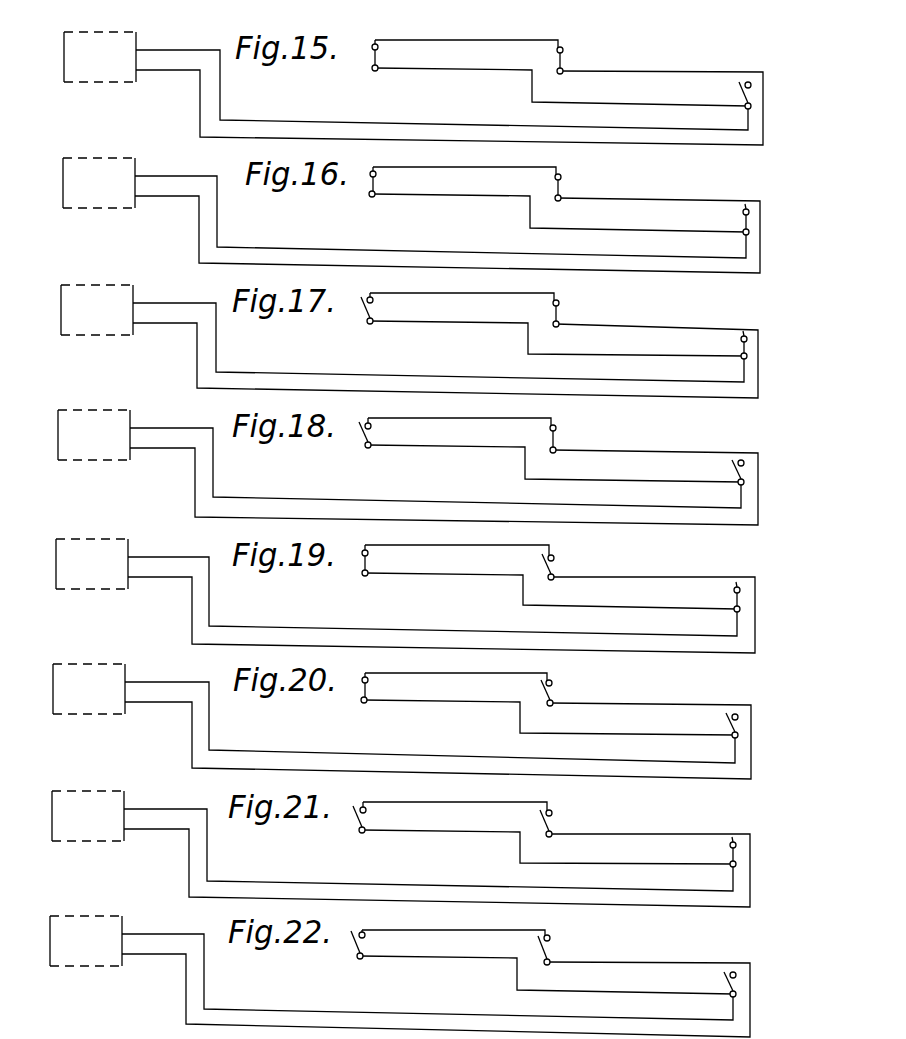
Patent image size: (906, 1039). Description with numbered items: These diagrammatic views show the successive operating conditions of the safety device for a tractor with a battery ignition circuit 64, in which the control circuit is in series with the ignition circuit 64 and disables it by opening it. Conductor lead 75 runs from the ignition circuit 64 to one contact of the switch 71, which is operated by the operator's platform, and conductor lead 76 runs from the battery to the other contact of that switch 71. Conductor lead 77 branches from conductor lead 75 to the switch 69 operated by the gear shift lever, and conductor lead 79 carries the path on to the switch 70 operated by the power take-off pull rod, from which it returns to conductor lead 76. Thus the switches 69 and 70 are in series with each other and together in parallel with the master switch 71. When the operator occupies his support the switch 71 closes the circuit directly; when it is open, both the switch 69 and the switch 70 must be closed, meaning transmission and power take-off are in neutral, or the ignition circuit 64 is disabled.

In FIG. 15, the ignition circuit 64 is at (92, 5).
In FIG. 16, the ignition circuit 64 is at (91, 131).
In FIG. 17, the ignition circuit 64 is at (89, 258).
In FIG. 18, the ignition circuit 64 is at (86, 383).
In FIG. 19, the ignition circuit 64 is at (84, 512).
In FIG. 20, the ignition circuit 64 is at (81, 637).
In FIG. 21, the ignition circuit 64 is at (80, 764).
In FIG. 22, the ignition circuit 64 is at (78, 889).
In FIG. 15, the switch 69 is at (381, 57).
In FIG. 16, the switch 69 is at (379, 185).
In FIG. 17, the switch 69 is at (376, 311).
In FIG. 18, the switch 69 is at (374, 436).
In FIG. 19, the switch 69 is at (371, 564).
In FIG. 20, the switch 69 is at (371, 691).
In FIG. 21, the switch 69 is at (369, 821).
In FIG. 22, the switch 69 is at (368, 946).
In FIG. 15, the switch 70 is at (568, 59).
In FIG. 16, the switch 70 is at (566, 188).
In FIG. 17, the switch 70 is at (564, 314).
In FIG. 18, the switch 70 is at (561, 440).
In FIG. 19, the switch 70 is at (559, 568).
In FIG. 20, the switch 70 is at (557, 693).
In FIG. 21, the switch 70 is at (557, 824).
In FIG. 22, the switch 70 is at (555, 951).
In FIG. 15, the switch 71 is at (737, 93).
In FIG. 16, the switch 71 is at (735, 220).
In FIG. 17, the switch 71 is at (733, 347).
In FIG. 18, the switch 71 is at (730, 471).
In FIG. 19, the switch 71 is at (726, 598).
In FIG. 20, the switch 71 is at (724, 725).
In FIG. 21, the switch 71 is at (722, 853).
In FIG. 22, the switch 71 is at (722, 983).
In FIG. 15, the conductor lead 75 is at (431, 139).
In FIG. 16, the conductor lead 75 is at (446, 266).
In FIG. 17, the conductor lead 75 is at (441, 391).
In FIG. 18, the conductor lead 75 is at (421, 516).
In FIG. 19, the conductor lead 75 is at (426, 645).
In FIG. 20, the conductor lead 75 is at (436, 769).
In FIG. 21, the conductor lead 75 is at (446, 900).
In FIG. 22, the conductor lead 75 is at (431, 1028).
In FIG. 15, the conductor lead 76 is at (497, 110).
In FIG. 16, the conductor lead 76 is at (512, 237).
In FIG. 17, the conductor lead 76 is at (507, 362).
In FIG. 18, the conductor lead 76 is at (487, 487).
In FIG. 19, the conductor lead 76 is at (492, 616).
In FIG. 20, the conductor lead 76 is at (502, 740).
In FIG. 21, the conductor lead 76 is at (512, 871).
In FIG. 22, the conductor lead 76 is at (497, 999).
In FIG. 15, the conductor lead 77 is at (588, 88).
In FIG. 16, the conductor lead 77 is at (600, 233).
In FIG. 17, the conductor lead 77 is at (598, 359).
In FIG. 18, the conductor lead 77 is at (595, 484).
In FIG. 19, the conductor lead 77 is at (593, 610).
In FIG. 20, the conductor lead 77 is at (590, 738).
In FIG. 21, the conductor lead 77 is at (590, 868).
In FIG. 22, the conductor lead 77 is at (587, 997).
In FIG. 15, the conductor lead 79 is at (492, 30).
In FIG. 16, the conductor lead 79 is at (468, 165).
In FIG. 17, the conductor lead 79 is at (465, 291).
In FIG. 18, the conductor lead 79 is at (463, 416).
In FIG. 19, the conductor lead 79 is at (460, 543).
In FIG. 20, the conductor lead 79 is at (460, 671).
In FIG. 21, the conductor lead 79 is at (458, 800).
In FIG. 22, the conductor lead 79 is at (457, 928).